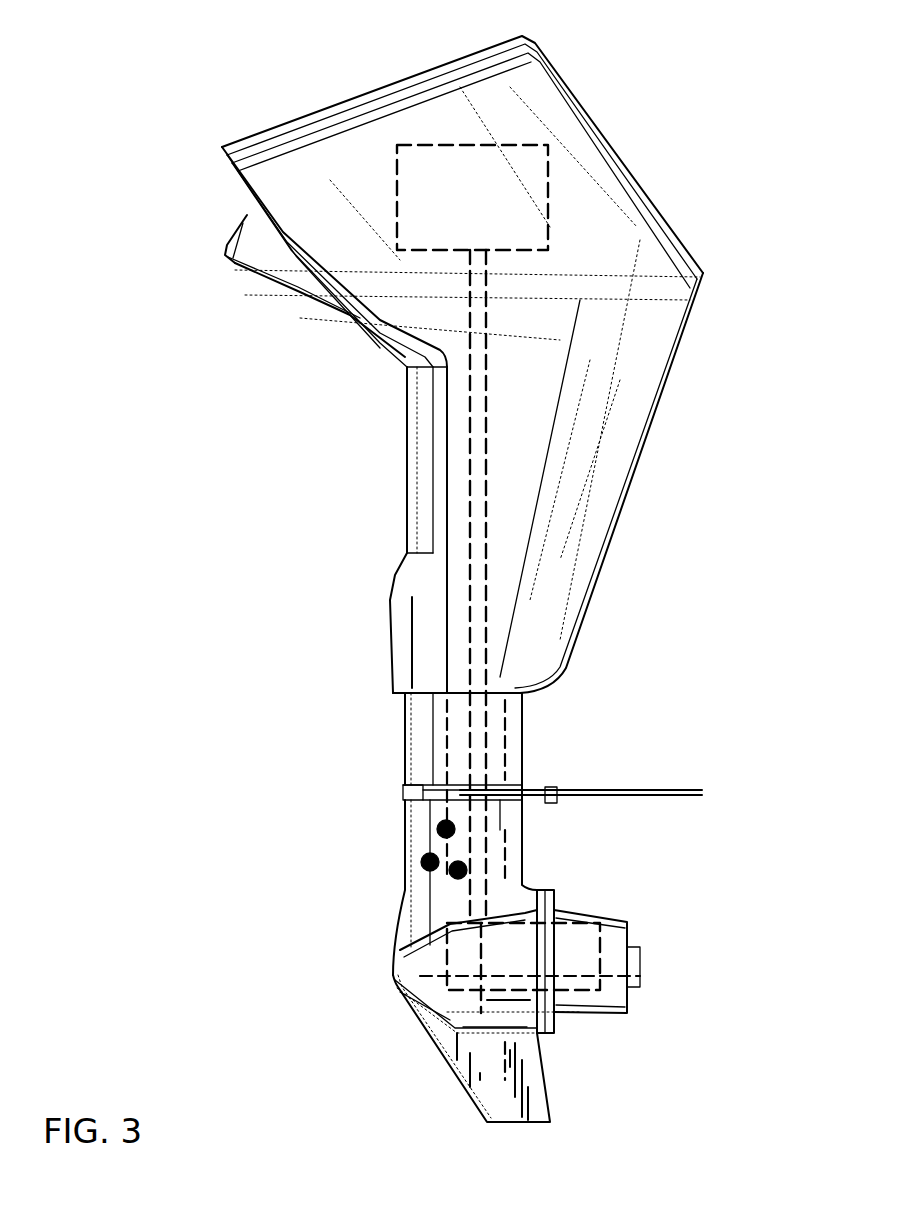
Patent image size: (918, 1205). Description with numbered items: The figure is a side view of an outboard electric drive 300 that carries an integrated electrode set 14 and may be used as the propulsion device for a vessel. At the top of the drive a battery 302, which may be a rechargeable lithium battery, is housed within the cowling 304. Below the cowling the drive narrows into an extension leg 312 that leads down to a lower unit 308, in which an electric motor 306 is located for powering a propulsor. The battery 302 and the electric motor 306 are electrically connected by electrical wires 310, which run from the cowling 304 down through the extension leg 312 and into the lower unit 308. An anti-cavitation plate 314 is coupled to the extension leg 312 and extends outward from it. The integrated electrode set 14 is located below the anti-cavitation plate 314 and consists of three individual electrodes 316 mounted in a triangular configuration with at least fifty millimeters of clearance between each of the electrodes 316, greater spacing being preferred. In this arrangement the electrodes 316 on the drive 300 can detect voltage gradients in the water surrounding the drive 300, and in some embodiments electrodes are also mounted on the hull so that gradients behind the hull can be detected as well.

The electric drive 300 is at (164, 121).
The battery 302 is at (550, 167).
The cowling 304 is at (750, 234).
The electric motor 306 is at (582, 922).
The lower unit 308 is at (348, 978).
The electrical wires 310 is at (473, 458).
The extension leg 312 is at (573, 747).
The anti-cavitation plate 314 is at (673, 790).
The electrodes 316 is at (437, 829).
The integrated electrode set 14 is at (286, 806).